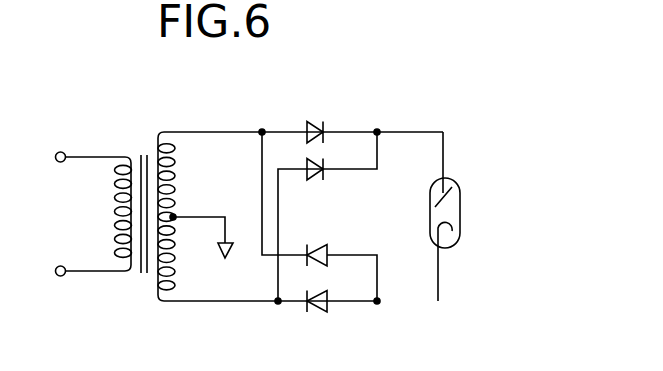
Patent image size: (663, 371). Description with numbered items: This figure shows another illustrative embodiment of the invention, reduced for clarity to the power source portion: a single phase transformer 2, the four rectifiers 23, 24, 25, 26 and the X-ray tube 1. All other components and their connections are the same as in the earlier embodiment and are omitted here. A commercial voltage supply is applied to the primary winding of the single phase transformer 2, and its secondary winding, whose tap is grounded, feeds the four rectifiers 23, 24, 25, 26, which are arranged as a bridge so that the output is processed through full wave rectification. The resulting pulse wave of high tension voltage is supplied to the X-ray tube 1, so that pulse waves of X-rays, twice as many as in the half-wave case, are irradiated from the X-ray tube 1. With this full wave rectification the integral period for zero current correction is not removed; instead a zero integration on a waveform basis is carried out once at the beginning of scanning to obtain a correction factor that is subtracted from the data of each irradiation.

The X-ray tube 1 is at (458, 240).
The single phase transformer 2 is at (142, 278).
The rectifier 23 is at (321, 117).
The rectifier 24 is at (321, 183).
The rectifier 25 is at (321, 239).
The rectifier 26 is at (321, 316).